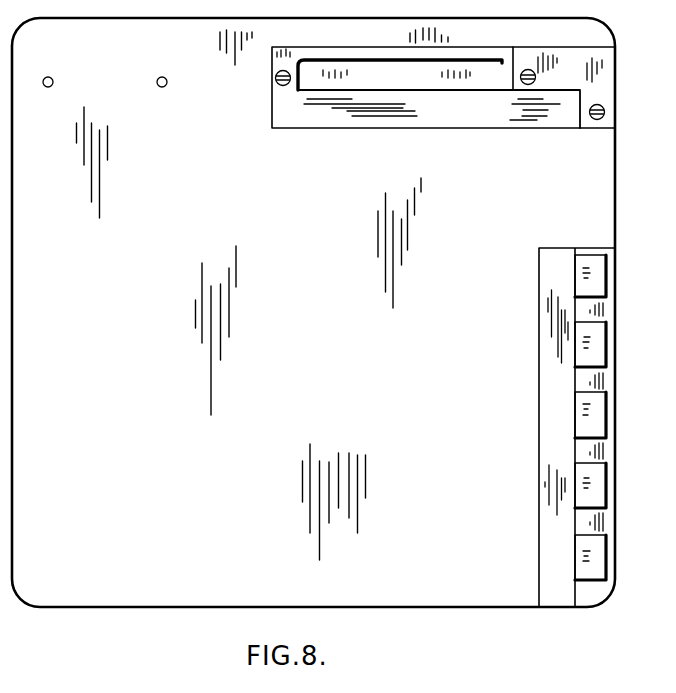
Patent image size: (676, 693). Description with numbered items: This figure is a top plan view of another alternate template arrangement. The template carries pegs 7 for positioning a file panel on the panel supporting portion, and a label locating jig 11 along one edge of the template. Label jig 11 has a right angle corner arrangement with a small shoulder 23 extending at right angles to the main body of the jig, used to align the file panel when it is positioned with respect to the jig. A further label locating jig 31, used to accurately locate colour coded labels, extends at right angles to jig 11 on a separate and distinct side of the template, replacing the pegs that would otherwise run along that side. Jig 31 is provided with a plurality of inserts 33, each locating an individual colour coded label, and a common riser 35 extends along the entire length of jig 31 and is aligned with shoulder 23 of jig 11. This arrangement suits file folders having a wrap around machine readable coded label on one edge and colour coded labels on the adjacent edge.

The pegs 7 is at (52, 78).
The label locating jig 11 is at (600, 78).
The shoulder section 23 is at (580, 118).
The label locating jig 31 is at (562, 262).
The inserts 33 is at (602, 275).
The common riser 35 is at (575, 525).